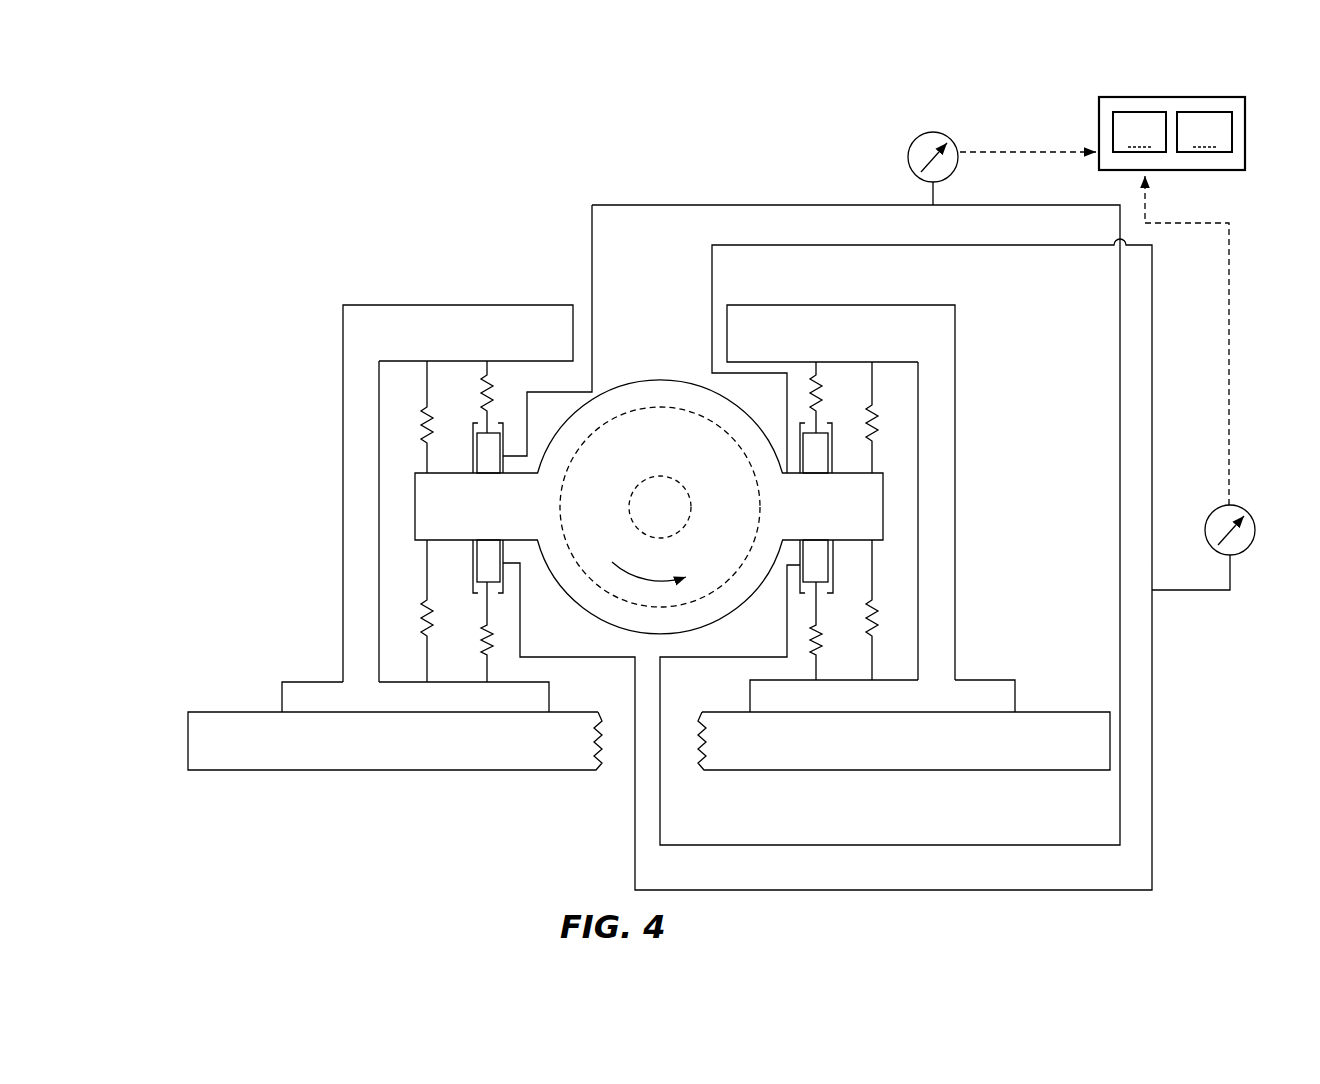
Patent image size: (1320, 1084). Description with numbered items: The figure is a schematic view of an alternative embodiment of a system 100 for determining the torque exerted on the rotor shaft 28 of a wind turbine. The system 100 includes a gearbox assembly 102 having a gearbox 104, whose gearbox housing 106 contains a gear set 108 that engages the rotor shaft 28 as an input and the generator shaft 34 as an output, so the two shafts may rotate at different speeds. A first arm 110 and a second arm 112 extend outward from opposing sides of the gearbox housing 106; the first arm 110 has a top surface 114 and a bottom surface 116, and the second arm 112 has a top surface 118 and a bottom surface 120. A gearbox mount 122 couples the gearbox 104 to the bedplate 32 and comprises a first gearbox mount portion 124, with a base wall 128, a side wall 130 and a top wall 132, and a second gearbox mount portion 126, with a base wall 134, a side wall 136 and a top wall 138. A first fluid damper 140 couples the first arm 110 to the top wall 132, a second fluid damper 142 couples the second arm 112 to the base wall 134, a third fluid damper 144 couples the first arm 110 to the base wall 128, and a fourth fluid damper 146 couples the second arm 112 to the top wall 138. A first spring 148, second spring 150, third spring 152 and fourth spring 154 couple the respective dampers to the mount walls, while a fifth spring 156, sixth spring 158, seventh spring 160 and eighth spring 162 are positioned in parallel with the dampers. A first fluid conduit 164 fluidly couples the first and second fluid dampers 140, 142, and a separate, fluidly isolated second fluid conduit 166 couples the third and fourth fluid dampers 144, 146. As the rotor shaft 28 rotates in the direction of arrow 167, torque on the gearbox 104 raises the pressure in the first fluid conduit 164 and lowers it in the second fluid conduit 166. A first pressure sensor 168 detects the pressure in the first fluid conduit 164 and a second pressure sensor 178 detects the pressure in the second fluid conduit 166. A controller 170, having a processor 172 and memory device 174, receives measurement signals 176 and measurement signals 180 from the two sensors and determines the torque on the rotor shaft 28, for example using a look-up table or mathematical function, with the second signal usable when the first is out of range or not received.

The system 100 is at (188, 166).
The gearbox assembly 102 is at (418, 227).
The gearbox 104 is at (640, 373).
The gearbox housing 106 is at (652, 380).
The gear set 108 is at (623, 462).
The rotor shaft 28 is at (668, 498).
The generator shaft 34 is at (660, 507).
The first arm 110 is at (415, 528).
The second arm 112 is at (885, 535).
The top surface 114 is at (415, 473).
The bottom surface 116 is at (415, 545).
The top surface 118 is at (880, 473).
The bottom surface 120 is at (875, 541).
The gearbox mount 122 is at (208, 354).
The first gearbox mount portion 124 is at (332, 496).
The second gearbox mount portion 126 is at (988, 551).
The base wall 128 is at (307, 680).
The side wall 130 is at (343, 565).
The top wall 132 is at (368, 305).
The base wall 134 is at (972, 678).
The side wall 136 is at (955, 400).
The top wall 138 is at (955, 305).
The first fluid damper 140 is at (472, 458).
The second fluid damper 142 is at (833, 565).
The third fluid damper 144 is at (472, 573).
The fourth fluid damper 146 is at (833, 465).
The first spring 148 is at (483, 365).
The second spring 150 is at (818, 663).
The third spring 152 is at (483, 655).
The fourth spring 154 is at (822, 388).
The fifth spring 156 is at (427, 375).
The sixth spring 158 is at (873, 667).
The seventh spring 160 is at (427, 660).
The eighth spring 162 is at (872, 377).
The first fluid conduit 164 is at (785, 205).
The second fluid conduit 166 is at (1152, 380).
The arrow 167 is at (637, 577).
The first pressure sensor 168 is at (915, 145).
The controller 170 is at (1213, 170).
The processor 172 is at (1139, 132).
The memory device 174 is at (1204, 132).
The measurement signals 176 is at (1035, 150).
The second pressure sensor 178 is at (1233, 505).
The measurement signals 180 is at (1229, 380).
The bedplate 32 is at (275, 770).